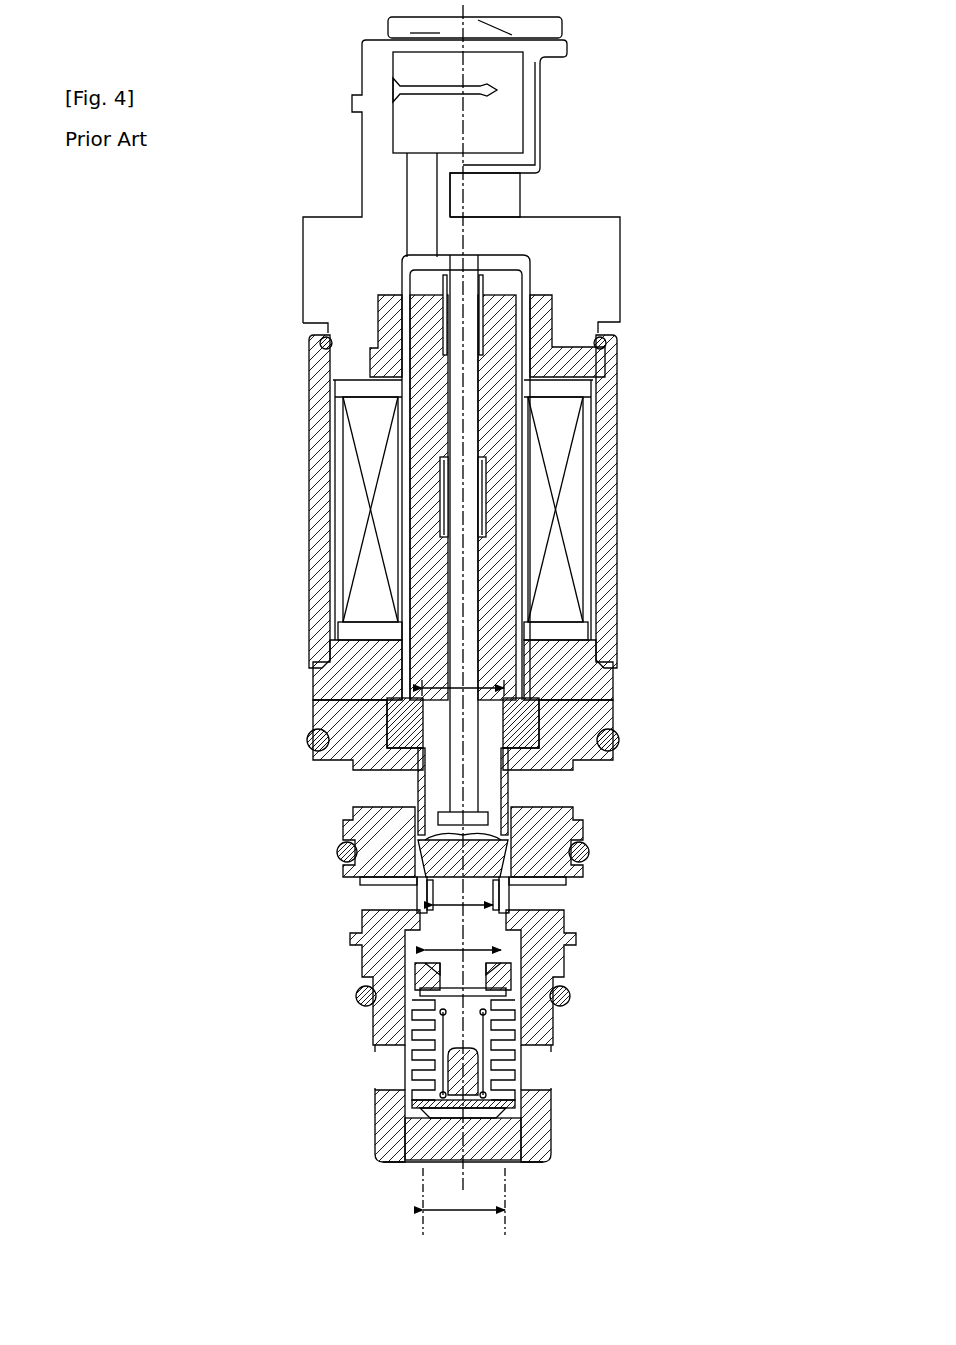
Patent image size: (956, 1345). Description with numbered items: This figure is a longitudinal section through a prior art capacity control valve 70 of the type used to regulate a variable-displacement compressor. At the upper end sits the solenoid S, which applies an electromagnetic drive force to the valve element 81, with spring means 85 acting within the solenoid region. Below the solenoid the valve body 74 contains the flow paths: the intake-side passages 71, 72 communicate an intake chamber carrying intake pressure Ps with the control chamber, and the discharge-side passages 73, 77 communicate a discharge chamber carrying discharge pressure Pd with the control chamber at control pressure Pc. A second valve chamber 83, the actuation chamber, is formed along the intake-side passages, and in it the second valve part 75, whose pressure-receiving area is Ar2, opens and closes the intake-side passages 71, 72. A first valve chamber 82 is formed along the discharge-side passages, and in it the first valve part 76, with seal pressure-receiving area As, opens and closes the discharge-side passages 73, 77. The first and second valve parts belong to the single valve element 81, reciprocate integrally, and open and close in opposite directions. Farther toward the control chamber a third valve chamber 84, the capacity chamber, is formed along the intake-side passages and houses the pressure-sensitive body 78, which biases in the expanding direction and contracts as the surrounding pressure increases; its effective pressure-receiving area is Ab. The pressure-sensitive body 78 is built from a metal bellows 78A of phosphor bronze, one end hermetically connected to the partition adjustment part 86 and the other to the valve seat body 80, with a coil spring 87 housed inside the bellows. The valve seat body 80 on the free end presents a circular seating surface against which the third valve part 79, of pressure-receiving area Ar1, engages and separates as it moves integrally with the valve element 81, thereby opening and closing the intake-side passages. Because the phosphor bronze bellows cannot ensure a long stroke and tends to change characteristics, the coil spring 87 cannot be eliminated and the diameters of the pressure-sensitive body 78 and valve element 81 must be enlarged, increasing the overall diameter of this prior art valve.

The solenoid valve 70 is at (293, 496).
The solenoid S is at (345, 548).
The spring means 85 is at (490, 302).
The second valve part 75 is at (512, 795).
The pressure-receiving area of the second valve part Ar2 is at (463, 680).
The intake-side passage 71 is at (380, 800).
The intake-side passage 72 is at (420, 790).
The second valve chamber 83 is at (512, 805).
The intake pressure Ps is at (342, 788).
The valve element 81 is at (514, 855).
The first valve part 76 is at (430, 893).
The first valve chamber 82 is at (512, 893).
The discharge-side passage 77 is at (505, 945).
The discharge pressure Pd is at (342, 905).
The seal pressure-receiving area of the first valve part As is at (463, 893).
The discharge-side passage 73 is at (390, 908).
The pressure-receiving area of the third valve part Ar1 is at (463, 940).
The third valve part 79 is at (512, 970).
The third valve chamber 84 is at (405, 1055).
The coil spring 87 is at (490, 1060).
The metal bellows 78A is at (510, 1075).
The valve seat body 80 is at (550, 1020).
The pressure-sensitive body 78 is at (400, 1110).
The control pressure Pc is at (352, 1067).
The bottom body 74 is at (375, 1082).
The partition adjustment part 86 is at (520, 1160).
The effective pressure-receiving area of the pressure-sensitive body Ab is at (464, 1206).